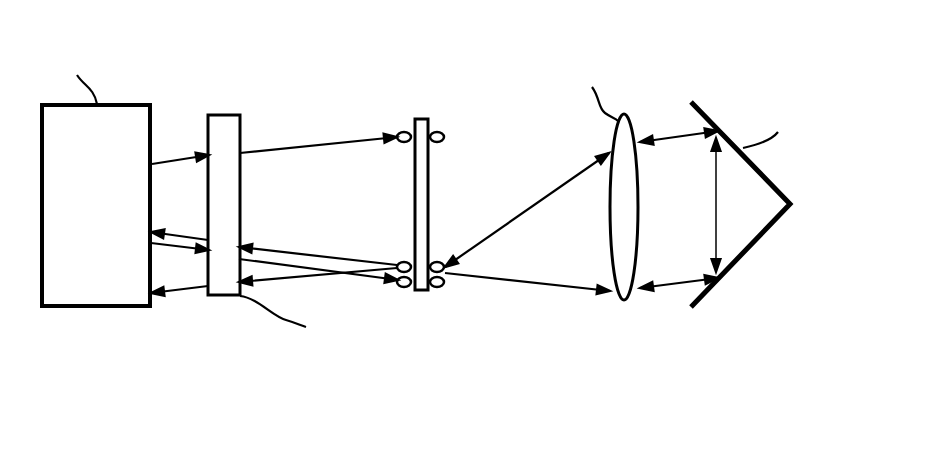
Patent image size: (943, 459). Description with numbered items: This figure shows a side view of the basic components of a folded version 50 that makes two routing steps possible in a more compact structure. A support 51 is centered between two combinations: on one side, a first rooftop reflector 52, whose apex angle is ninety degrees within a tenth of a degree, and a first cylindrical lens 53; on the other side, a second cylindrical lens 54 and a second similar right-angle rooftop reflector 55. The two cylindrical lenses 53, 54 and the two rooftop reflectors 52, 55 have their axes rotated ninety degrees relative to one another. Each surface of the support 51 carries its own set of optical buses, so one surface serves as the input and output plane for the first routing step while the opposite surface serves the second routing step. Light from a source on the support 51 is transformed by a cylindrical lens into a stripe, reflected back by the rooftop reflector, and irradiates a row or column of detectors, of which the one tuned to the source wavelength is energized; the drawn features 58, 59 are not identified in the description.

The folded version 50 is at (578, 402).
The support 51 is at (429, 228).
The first rooftop reflector 52 is at (760, 240).
The first cylindrical lens 53 is at (627, 300).
The second cylindrical lens 54 is at (220, 295).
The second rooftop reflector 55 is at (120, 306).
The pinhole 58 is at (437, 132).
The pinhole 59 is at (404, 130).